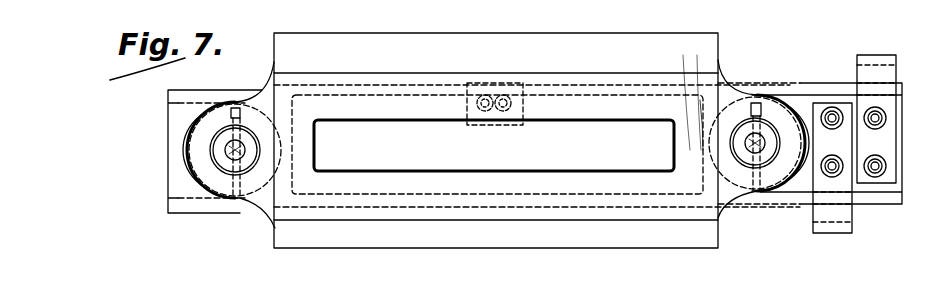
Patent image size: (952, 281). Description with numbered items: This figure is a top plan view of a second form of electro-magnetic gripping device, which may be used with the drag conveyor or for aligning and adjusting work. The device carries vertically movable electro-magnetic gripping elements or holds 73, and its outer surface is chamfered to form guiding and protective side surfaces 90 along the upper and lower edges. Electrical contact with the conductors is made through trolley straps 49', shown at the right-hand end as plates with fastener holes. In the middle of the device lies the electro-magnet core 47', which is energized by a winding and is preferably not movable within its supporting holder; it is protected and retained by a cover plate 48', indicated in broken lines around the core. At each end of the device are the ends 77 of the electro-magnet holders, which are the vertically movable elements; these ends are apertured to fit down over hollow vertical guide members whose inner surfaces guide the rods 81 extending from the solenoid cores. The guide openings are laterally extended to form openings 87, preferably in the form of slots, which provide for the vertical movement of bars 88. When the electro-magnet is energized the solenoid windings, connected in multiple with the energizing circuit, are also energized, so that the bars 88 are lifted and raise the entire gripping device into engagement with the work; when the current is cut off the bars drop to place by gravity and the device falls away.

The guiding and protective side surfaces 90 is at (535, 140).
The electro-magnet core 47' is at (494, 145).
The cover plate 48' is at (497, 180).
The ends of the electro-magnet holders 77 is at (195, 147).
The rods 81 is at (230, 157).
The bars 88 is at (258, 176).
The openings 87 is at (236, 108).
The electro-magnetic gripping elements or holds 73 is at (708, 110).
The trolley straps 49' is at (872, 144).